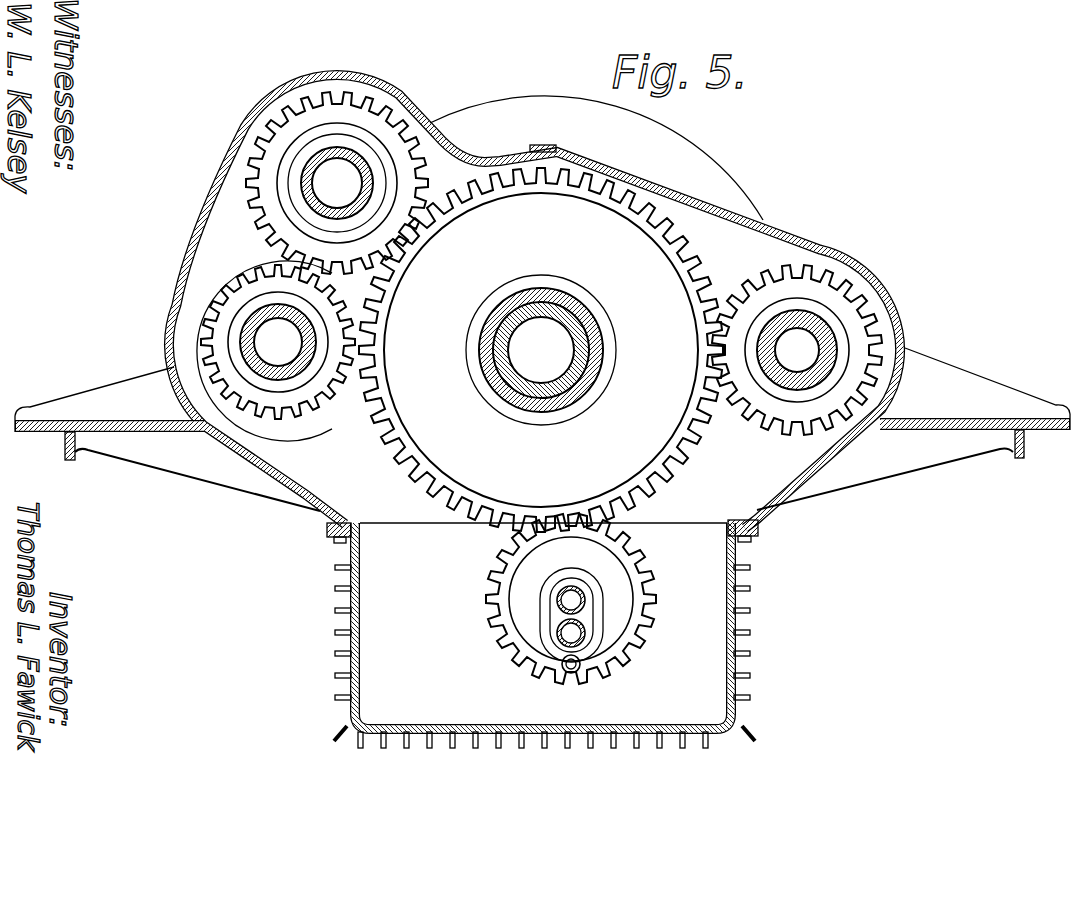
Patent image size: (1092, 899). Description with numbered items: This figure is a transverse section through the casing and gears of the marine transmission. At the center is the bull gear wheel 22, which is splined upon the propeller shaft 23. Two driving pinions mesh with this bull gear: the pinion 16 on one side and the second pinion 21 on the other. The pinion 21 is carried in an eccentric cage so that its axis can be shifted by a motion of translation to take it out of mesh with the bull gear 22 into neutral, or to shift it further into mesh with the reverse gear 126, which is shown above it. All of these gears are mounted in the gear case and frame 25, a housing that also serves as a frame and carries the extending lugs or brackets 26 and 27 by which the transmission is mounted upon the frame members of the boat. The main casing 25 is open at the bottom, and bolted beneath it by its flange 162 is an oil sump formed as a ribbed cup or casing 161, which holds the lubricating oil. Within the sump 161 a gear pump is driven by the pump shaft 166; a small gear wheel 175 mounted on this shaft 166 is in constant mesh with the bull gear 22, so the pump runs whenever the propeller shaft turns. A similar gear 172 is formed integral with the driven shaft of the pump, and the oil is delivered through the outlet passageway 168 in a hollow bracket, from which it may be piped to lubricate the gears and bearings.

The driving pinion 16 is at (812, 288).
The second pinion 21 is at (222, 302).
The bull gear wheel 22 is at (697, 298).
The propeller shaft 23 is at (588, 353).
The gear case and frame 25 is at (770, 229).
The lug or bracket 26 is at (970, 388).
The lug or bracket 27 is at (107, 397).
The reverse gear 126 is at (268, 152).
The ribbed cup or casing 161 is at (748, 645).
The flange 162 is at (759, 528).
The pump shaft 166 is at (585, 600).
The outlet passageway 168 is at (580, 671).
The gear 172 is at (585, 633).
The small gear wheel 175 is at (627, 570).